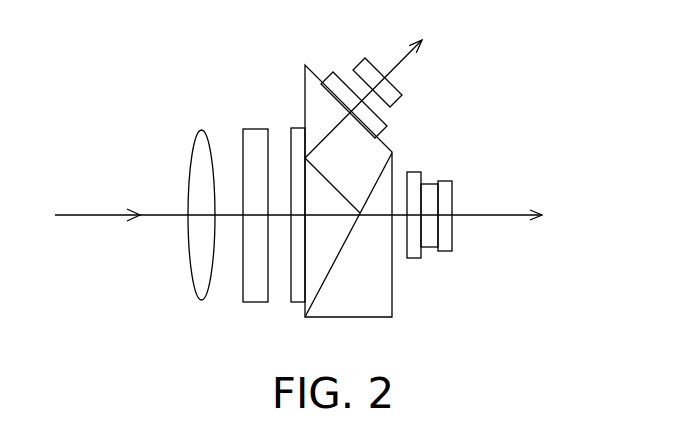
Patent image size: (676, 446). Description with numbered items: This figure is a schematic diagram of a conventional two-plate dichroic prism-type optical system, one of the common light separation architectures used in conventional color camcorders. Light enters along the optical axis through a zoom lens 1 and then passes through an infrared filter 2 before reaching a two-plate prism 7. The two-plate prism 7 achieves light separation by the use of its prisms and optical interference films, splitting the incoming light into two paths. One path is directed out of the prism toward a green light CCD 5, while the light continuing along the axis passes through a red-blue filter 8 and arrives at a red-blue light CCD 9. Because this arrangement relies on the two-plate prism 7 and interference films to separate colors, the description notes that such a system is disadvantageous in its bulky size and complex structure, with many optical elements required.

The zoom lens 1 is at (187, 170).
The infrared filter 2 is at (252, 143).
The green light CCD 5 is at (394, 100).
The two-plate prism 7 is at (310, 110).
The red-blue filter 8 is at (414, 173).
The red-blue light CCD 9 is at (442, 247).